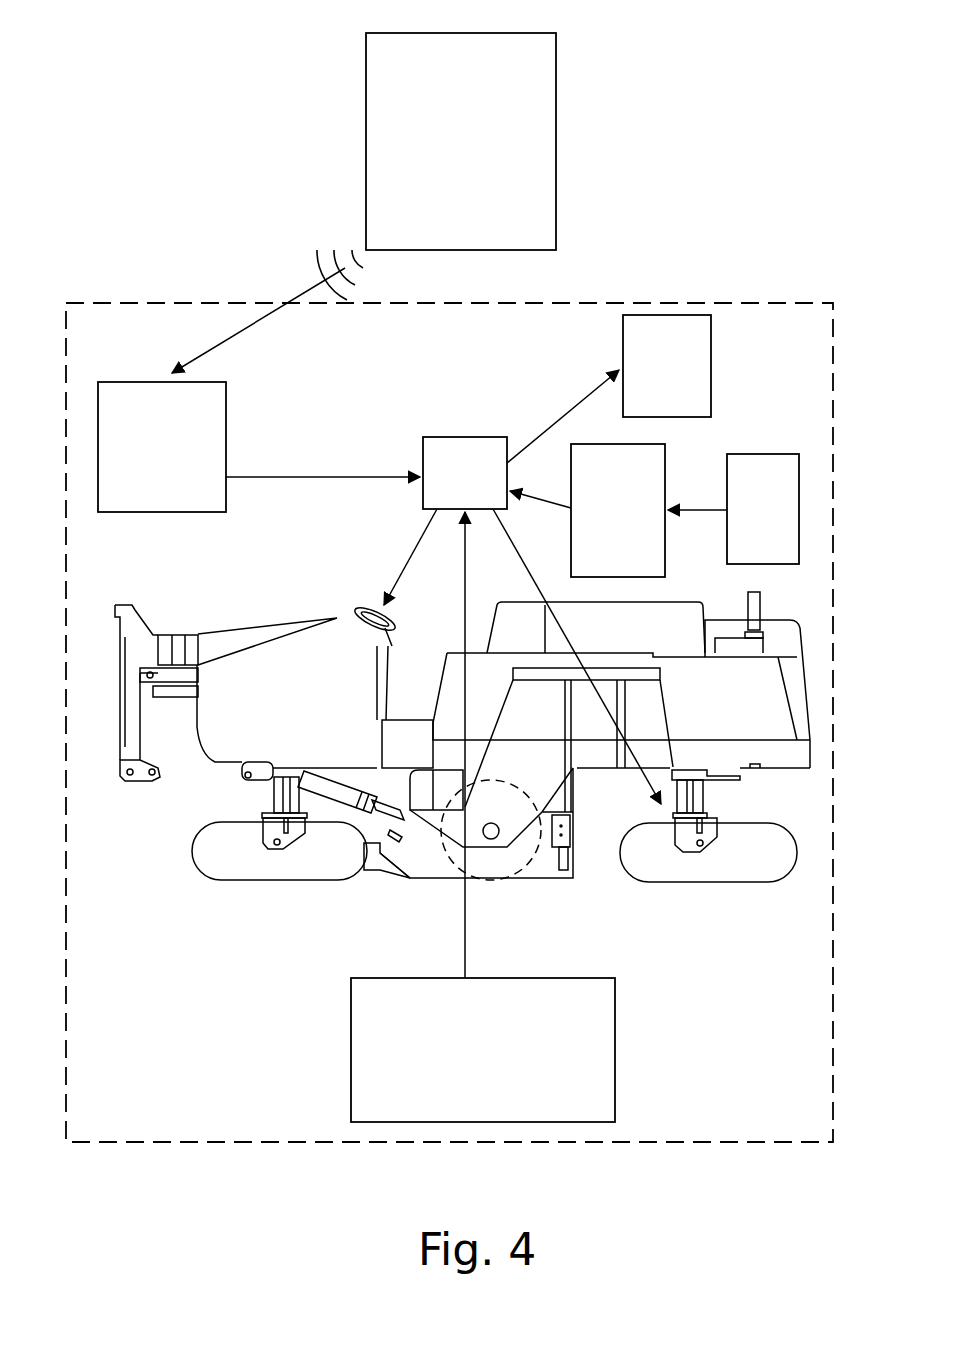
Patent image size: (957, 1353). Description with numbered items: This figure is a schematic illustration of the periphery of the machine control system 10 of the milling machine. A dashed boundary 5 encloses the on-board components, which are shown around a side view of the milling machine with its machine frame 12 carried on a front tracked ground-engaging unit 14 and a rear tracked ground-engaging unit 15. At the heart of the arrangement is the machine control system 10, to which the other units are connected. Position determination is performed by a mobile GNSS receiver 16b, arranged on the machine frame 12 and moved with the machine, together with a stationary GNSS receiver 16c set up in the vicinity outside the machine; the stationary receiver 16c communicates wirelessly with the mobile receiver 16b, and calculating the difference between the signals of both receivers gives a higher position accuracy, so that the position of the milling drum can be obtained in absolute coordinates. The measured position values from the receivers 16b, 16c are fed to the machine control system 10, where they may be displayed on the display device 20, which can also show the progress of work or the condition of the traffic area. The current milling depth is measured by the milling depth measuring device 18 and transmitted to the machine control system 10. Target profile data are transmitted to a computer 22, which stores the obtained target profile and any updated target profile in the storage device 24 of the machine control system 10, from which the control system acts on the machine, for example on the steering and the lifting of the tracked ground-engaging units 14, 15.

The control system of construction machine 5 is at (835, 318).
The machine control system 10 is at (459, 433).
The machine frame 12 is at (780, 753).
The front tracked ground-engaging unit 14 is at (246, 862).
The rear tracked ground-engaging unit 15 is at (750, 862).
The mobile GNSS receiver 16b is at (219, 406).
The stationary GNSS receiver 16c is at (546, 93).
The milling depth measuring device 18 is at (607, 1029).
The display device 20 is at (703, 353).
The computer 22 is at (782, 452).
The storage device 24 is at (667, 466).